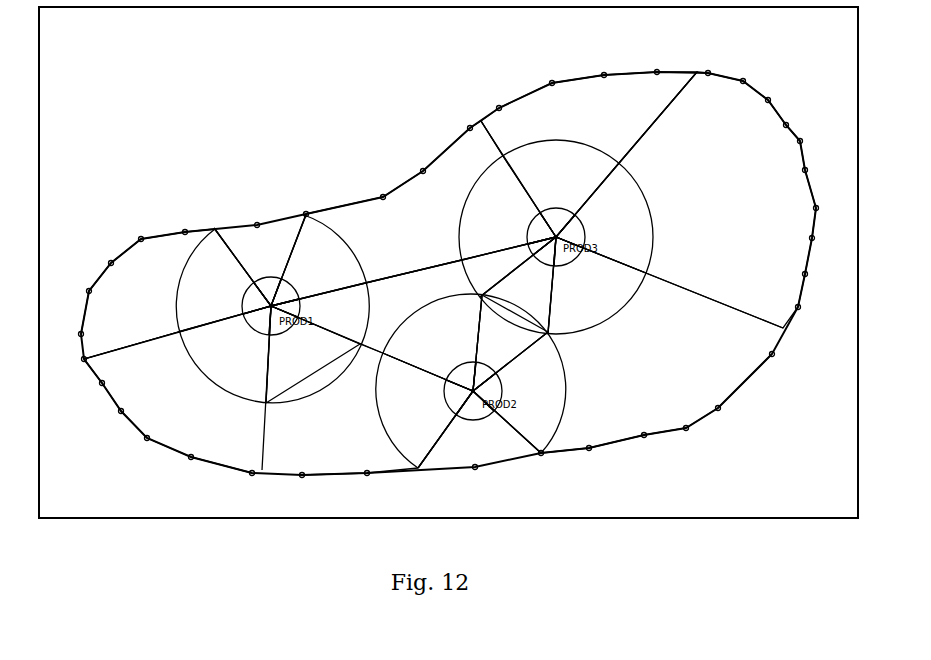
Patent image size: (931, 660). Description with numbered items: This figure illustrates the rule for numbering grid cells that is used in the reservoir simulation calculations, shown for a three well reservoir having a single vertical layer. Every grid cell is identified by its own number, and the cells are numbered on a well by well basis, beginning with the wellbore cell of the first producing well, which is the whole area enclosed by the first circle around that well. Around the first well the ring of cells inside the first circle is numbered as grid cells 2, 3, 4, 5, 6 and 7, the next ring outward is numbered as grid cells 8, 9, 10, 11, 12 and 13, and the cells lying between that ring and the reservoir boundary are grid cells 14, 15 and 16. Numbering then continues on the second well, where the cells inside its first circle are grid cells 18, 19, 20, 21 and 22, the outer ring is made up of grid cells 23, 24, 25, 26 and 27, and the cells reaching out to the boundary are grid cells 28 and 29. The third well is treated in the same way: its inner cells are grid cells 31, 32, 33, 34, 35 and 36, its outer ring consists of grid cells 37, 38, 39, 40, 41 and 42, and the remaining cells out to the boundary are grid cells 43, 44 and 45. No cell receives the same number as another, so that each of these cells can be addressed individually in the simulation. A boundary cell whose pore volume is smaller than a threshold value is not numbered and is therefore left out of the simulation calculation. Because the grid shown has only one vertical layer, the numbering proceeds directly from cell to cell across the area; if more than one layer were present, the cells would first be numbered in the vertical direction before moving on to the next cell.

The grid cell 2 is at (285, 308).
The grid cell 3 is at (285, 292).
The grid cell 4 is at (267, 292).
The grid cell 5 is at (257, 298).
The grid cell 6 is at (257, 320).
The grid cell 7 is at (272, 309).
The grid cell 8 is at (318, 313).
The grid cell 9 is at (318, 260).
The grid cell 10 is at (260, 260).
The grid cell 11 is at (224, 280).
The grid cell 12 is at (224, 354).
The grid cell 13 is at (313, 354).
The grid cell 14 is at (411, 307).
The grid cell 15 is at (148, 294).
The grid cell 16 is at (168, 402).
The grid cell 18 is at (484, 392).
The grid cell 19 is at (484, 376).
The grid cell 20 is at (461, 376).
The grid cell 21 is at (459, 397).
The grid cell 22 is at (475, 404).
The grid cell 23 is at (510, 392).
The grid cell 24 is at (510, 343).
The grid cell 25 is at (433, 343).
The grid cell 26 is at (429, 411).
The grid cell 27 is at (479, 429).
The grid cell 28 is at (656, 403).
The grid cell 29 is at (342, 409).
The grid cell 31 is at (569, 231).
The grid cell 32 is at (557, 224).
The grid cell 33 is at (542, 228).
The grid cell 34 is at (552, 241).
The grid cell 35 is at (544, 251).
The grid cell 36 is at (568, 251).
The grid cell 37 is at (601, 218).
The grid cell 38 is at (561, 196).
The grid cell 39 is at (509, 208).
The grid cell 40 is at (509, 267).
The grid cell 41 is at (518, 285).
The grid cell 42 is at (597, 285).
The grid cell 43 is at (717, 200).
The grid cell 44 is at (589, 117).
The grid cell 45 is at (404, 202).